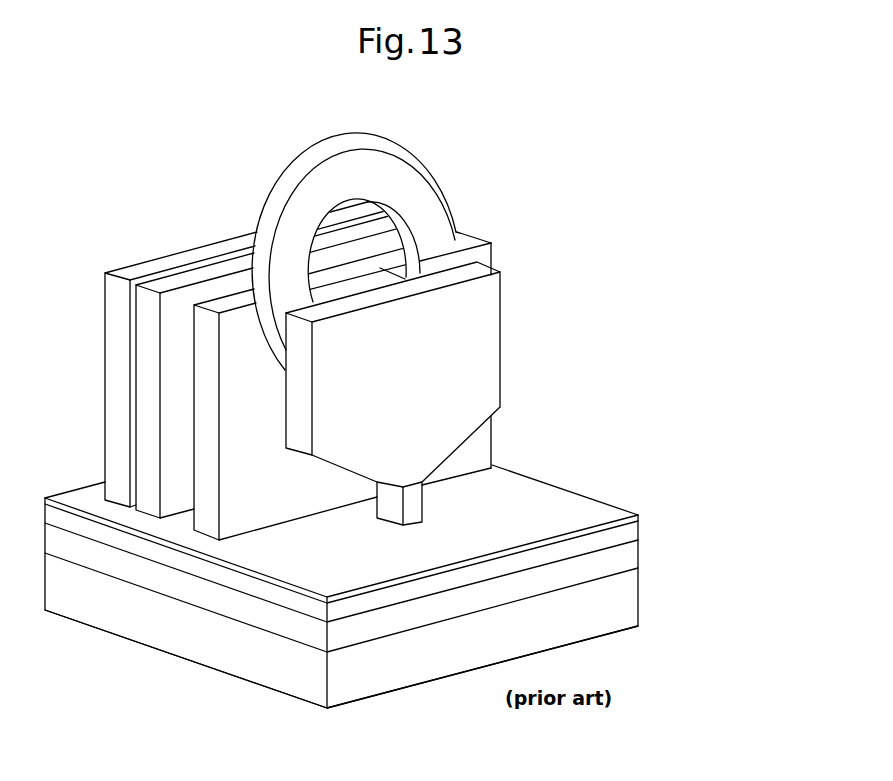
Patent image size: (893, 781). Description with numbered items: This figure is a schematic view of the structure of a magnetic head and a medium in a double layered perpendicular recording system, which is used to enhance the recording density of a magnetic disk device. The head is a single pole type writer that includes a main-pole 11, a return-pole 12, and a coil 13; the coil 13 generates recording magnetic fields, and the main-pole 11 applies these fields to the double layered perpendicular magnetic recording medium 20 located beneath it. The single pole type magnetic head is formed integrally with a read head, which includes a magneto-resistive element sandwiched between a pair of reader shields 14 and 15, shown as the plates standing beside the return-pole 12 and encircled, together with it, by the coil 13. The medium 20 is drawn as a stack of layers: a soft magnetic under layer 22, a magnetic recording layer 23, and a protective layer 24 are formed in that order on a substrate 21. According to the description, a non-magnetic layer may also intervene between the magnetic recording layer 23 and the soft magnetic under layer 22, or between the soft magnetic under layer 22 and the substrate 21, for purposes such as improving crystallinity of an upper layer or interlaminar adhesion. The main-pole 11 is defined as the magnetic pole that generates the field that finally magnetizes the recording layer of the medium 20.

The main-pole 11 is at (412, 503).
The return-pole 12 is at (263, 503).
The coil 13 is at (425, 205).
The reader shield 14 is at (137, 267).
The reader shield 15 is at (189, 278).
The double layered perpendicular magnetic recording medium 20 is at (724, 520).
The substrate 21 is at (628, 608).
The soft magnetic under layer 22 is at (628, 560).
The magnetic recording layer 23 is at (628, 535).
The protective layer 24 is at (628, 517).